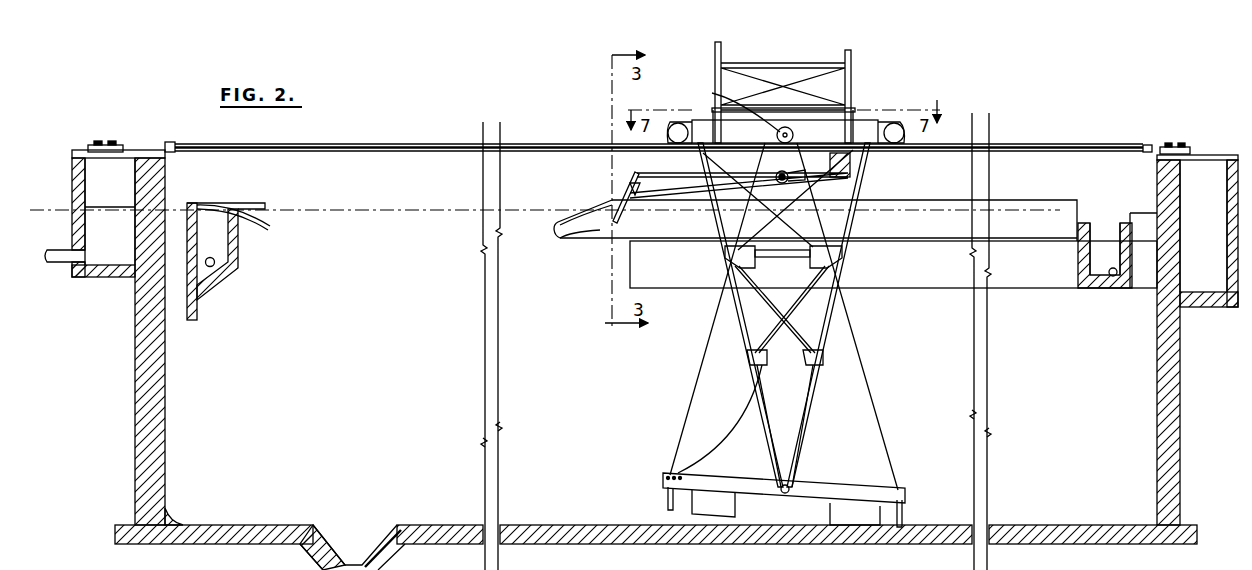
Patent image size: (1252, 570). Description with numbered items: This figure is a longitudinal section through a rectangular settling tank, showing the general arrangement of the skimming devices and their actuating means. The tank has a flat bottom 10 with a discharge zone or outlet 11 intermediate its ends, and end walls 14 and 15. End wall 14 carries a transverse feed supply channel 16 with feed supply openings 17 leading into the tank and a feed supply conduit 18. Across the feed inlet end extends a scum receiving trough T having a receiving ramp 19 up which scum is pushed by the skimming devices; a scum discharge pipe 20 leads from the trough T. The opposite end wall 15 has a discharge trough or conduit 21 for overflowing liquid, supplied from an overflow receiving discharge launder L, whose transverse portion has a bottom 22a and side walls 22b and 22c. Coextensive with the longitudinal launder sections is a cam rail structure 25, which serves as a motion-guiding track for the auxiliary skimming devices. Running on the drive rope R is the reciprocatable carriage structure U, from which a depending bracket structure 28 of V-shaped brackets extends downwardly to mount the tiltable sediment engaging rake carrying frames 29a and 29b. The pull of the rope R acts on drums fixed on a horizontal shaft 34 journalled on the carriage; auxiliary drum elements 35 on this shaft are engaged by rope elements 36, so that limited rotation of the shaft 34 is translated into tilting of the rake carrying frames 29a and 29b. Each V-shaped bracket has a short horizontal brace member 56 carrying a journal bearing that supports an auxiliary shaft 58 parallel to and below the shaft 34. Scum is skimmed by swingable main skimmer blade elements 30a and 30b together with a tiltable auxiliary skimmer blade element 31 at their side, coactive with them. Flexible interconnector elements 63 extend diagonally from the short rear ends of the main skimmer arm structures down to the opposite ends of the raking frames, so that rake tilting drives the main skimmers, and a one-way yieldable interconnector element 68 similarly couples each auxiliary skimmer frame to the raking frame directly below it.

The flat bottom 10 is at (565, 525).
The discharge zone or outlet 11 is at (345, 540).
The end wall 14 is at (135, 367).
The end wall 15 is at (1181, 410).
The transverse feed supply channel 16 is at (72, 212).
The feed supply openings 17 is at (138, 257).
The feed supply conduit 18 is at (60, 266).
The receiving ramp 19 is at (278, 221).
The scum discharge pipe 20 is at (214, 267).
The discharge trough or conduit 21 is at (1225, 265).
The bottom of transverse launder portion 22a is at (1112, 276).
The side wall of transverse launder portion 22b is at (1095, 258).
The side wall of transverse launder portion 22c is at (1117, 232).
The cam rail structure 25 is at (893, 203).
The depending bracket structure 28 is at (825, 382).
The tiltable rake carrying frame 29a is at (840, 490).
The tiltable rake carrying frame 29b is at (786, 491).
The main skimmer blade element 30a is at (550, 248).
The main skimmer blade element 30b is at (576, 265).
The auxiliary skimmer blade element 31 is at (625, 192).
The horizontal shaft 34 is at (733, 104).
The auxiliary drum element 35 is at (794, 134).
The rope element 36 is at (874, 403).
The short horizontal brace member 56 is at (757, 205).
The auxiliary shaft 58 is at (775, 215).
The interconnector element 63 is at (705, 400).
The one-way yieldable interconnector element 68 is at (738, 426).
The drive rope R is at (330, 146).
The scum receiving trough T is at (210, 247).
The reciprocatable carriage structure U is at (866, 107).
The overflow receiving discharge launder L is at (1100, 238).